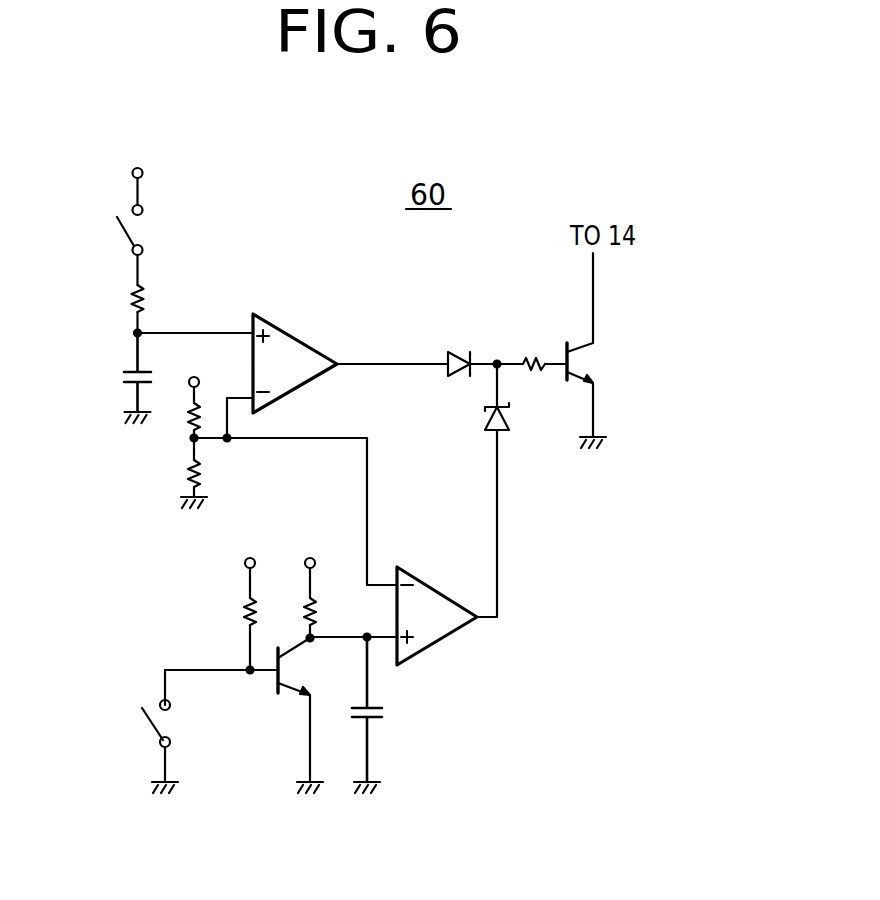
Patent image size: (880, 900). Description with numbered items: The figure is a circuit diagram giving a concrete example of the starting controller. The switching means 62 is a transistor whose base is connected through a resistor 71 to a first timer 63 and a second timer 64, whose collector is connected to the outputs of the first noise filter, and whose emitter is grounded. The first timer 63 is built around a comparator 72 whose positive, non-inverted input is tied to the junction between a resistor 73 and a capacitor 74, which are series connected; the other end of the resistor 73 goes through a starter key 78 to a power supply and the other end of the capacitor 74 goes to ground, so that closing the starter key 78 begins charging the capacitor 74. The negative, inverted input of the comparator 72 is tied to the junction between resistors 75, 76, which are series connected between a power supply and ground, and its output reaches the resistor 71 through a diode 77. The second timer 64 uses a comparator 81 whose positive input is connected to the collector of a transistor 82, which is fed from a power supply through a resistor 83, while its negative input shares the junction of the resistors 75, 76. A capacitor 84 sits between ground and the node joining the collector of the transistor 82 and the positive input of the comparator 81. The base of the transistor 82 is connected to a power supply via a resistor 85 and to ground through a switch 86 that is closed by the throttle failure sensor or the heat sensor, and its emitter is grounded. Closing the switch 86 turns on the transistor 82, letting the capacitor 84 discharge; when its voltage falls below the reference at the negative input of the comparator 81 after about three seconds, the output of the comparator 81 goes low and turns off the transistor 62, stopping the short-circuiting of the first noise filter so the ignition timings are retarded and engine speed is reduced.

The switching means 62 is at (560, 382).
The first timer 63 is at (313, 323).
The second timer 64 is at (457, 630).
The resistor 71 is at (536, 352).
The comparator 72 is at (296, 335).
The resistor 73 is at (150, 296).
The capacitor 74 is at (151, 372).
The resistor 75 is at (186, 415).
The resistor 76 is at (200, 476).
The diode 77 is at (460, 352).
The starter key 78 is at (125, 228).
The comparator 81 is at (425, 578).
The transistor 82 is at (272, 688).
The resistor 83 is at (318, 610).
The capacitor 84 is at (383, 715).
The resistor 85 is at (245, 620).
The switch 86 is at (150, 725).